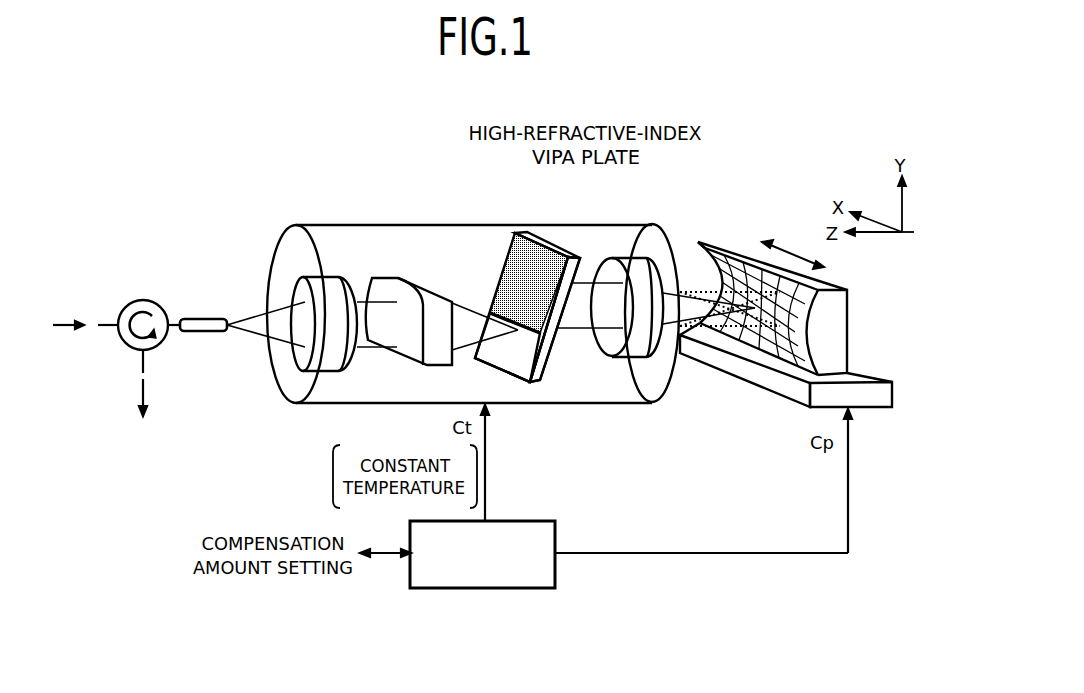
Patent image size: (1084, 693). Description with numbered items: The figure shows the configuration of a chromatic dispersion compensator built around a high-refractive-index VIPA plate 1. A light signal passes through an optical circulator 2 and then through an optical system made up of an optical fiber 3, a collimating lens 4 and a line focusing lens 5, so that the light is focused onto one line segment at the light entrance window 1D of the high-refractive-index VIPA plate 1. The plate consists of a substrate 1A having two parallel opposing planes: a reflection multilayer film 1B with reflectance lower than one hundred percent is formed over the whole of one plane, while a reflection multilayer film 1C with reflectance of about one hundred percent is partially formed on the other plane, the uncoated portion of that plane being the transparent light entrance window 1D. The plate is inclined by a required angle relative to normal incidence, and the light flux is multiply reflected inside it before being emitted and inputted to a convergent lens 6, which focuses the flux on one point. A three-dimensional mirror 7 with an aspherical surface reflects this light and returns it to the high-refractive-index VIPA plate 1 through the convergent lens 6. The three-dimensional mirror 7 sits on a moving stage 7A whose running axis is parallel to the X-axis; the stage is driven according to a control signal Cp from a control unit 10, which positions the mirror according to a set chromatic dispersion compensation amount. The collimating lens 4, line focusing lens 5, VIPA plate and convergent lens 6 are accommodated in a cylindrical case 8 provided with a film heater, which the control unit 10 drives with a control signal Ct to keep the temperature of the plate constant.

The high-refractive-index VIPA plate 1 is at (518, 305).
The substrate 1A is at (537, 380).
The reflection multilayer film 1B is at (550, 355).
The reflection multilayer film 1C is at (515, 267).
The light entrance window 1D is at (508, 345).
The optical circulator 2 is at (143, 300).
The optical fiber 3 is at (200, 318).
The collimating lens 4 is at (305, 276).
The line focusing lens 5 is at (388, 277).
The convergent lens 6 is at (620, 257).
The three-dimensional mirror 7 is at (848, 298).
The moving stage 7A is at (867, 368).
The case 8 is at (672, 387).
The control unit 10 is at (527, 590).